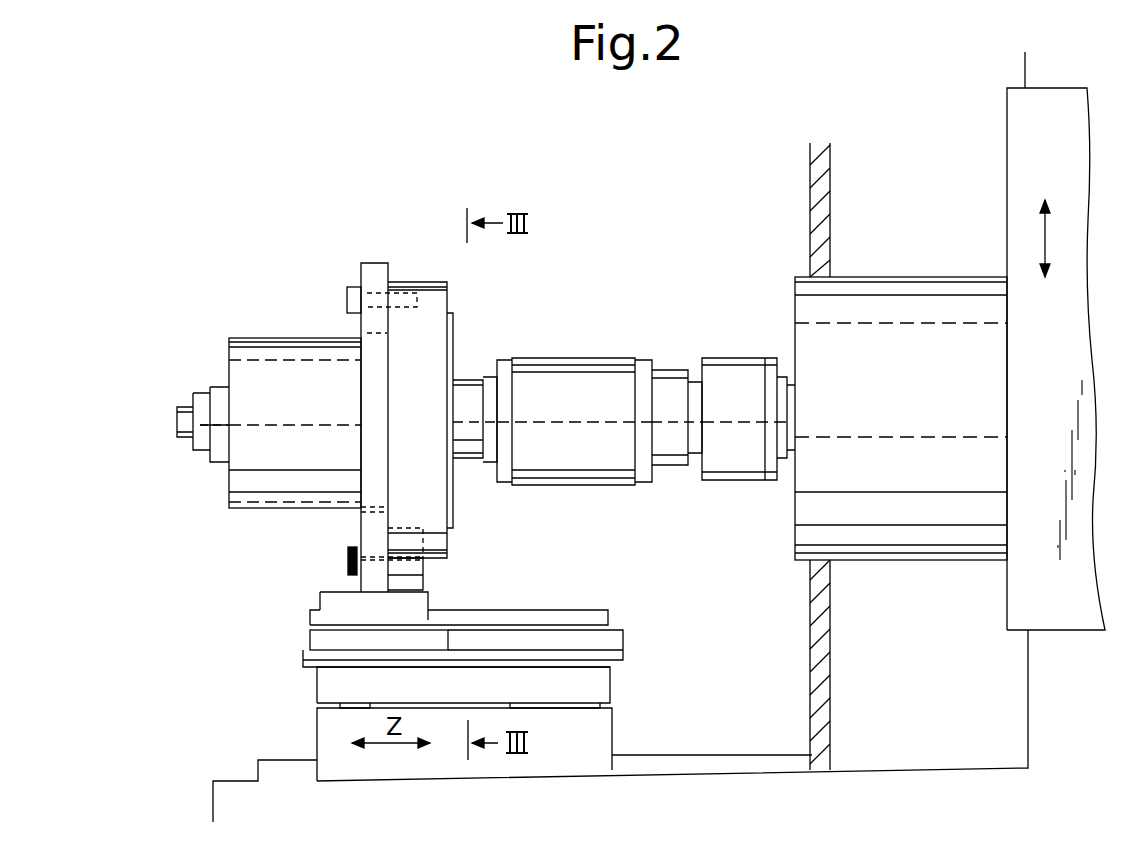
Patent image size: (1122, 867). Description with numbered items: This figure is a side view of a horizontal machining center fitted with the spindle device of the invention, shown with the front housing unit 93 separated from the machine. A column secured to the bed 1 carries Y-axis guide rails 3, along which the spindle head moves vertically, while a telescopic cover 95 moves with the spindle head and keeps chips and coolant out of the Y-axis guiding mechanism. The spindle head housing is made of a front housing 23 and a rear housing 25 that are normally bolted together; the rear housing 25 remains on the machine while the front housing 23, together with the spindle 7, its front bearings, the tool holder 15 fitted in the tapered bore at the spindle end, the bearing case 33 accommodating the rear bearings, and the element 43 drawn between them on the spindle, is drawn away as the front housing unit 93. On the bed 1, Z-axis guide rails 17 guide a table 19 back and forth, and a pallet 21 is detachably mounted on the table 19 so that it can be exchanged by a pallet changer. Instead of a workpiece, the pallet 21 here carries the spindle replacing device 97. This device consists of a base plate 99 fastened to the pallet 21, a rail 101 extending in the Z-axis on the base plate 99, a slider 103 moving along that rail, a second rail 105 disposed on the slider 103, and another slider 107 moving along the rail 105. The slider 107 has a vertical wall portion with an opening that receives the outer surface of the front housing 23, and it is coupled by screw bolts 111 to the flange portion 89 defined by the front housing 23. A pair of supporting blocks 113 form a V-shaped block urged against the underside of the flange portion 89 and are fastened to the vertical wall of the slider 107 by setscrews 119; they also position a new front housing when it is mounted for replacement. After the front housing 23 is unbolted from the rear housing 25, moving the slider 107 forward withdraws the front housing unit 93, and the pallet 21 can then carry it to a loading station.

The bed 1 is at (230, 793).
The Y-axis guide rails 3 is at (1040, 72).
The spindle 7 is at (466, 397).
The tool holder 15 is at (215, 420).
The Z-axis guide rails 17 is at (768, 766).
The table 19 is at (598, 735).
The pallet 21 is at (598, 680).
The front housing 23 is at (249, 350).
The rear housing 25 is at (893, 300).
The bearing case 33 is at (733, 375).
The spindle unit 43 is at (557, 378).
The flange portion 89 is at (427, 300).
The front housing unit 93 is at (616, 318).
The telescopic cover 95 is at (822, 165).
The spindle replacing device 97 is at (305, 589).
The base plate 99 is at (310, 660).
The rail 101 is at (610, 640).
The slider 103 is at (325, 642).
The rail 105 is at (600, 615).
The slider 107 is at (373, 278).
The screw bolts 111 is at (352, 300).
The supporting blocks 113 is at (407, 577).
The setscrews 119 is at (348, 558).